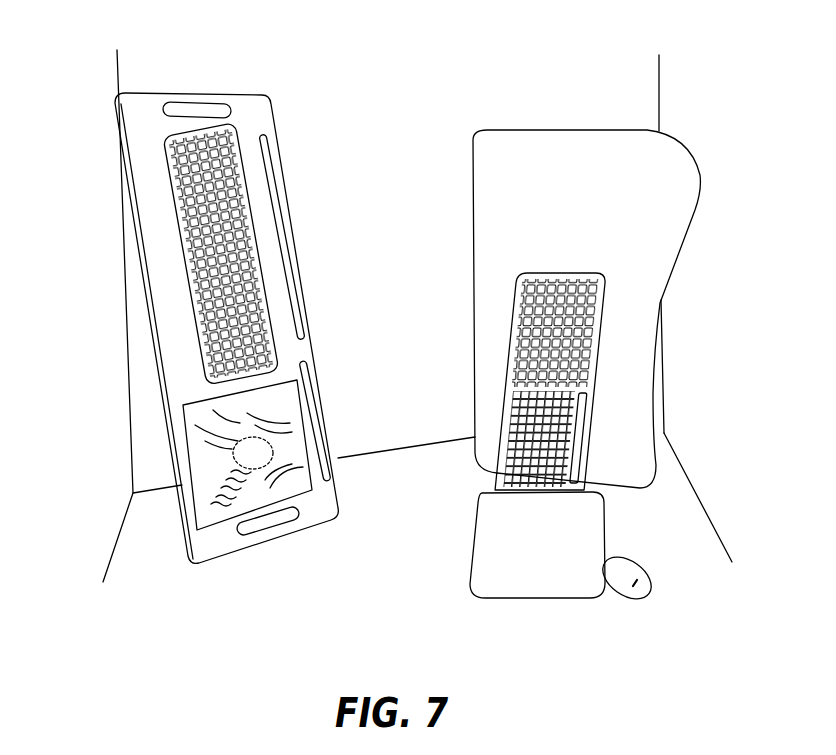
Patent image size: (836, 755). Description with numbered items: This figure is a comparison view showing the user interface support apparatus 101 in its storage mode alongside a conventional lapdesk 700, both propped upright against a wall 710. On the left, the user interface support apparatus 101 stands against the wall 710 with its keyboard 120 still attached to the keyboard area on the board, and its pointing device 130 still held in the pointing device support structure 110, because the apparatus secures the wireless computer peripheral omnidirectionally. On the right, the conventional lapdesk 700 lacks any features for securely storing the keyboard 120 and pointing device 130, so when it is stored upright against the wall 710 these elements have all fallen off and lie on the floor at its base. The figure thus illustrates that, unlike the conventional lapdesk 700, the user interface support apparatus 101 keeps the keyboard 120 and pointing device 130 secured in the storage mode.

The user interface support apparatus 101 is at (133, 123).
The keyboard 120 is at (180, 234).
The pointing device support structure 110 is at (183, 415).
The pointing device 130 is at (238, 457).
The conventional lapdesk 700 is at (632, 202).
The wall 710 is at (608, 77).